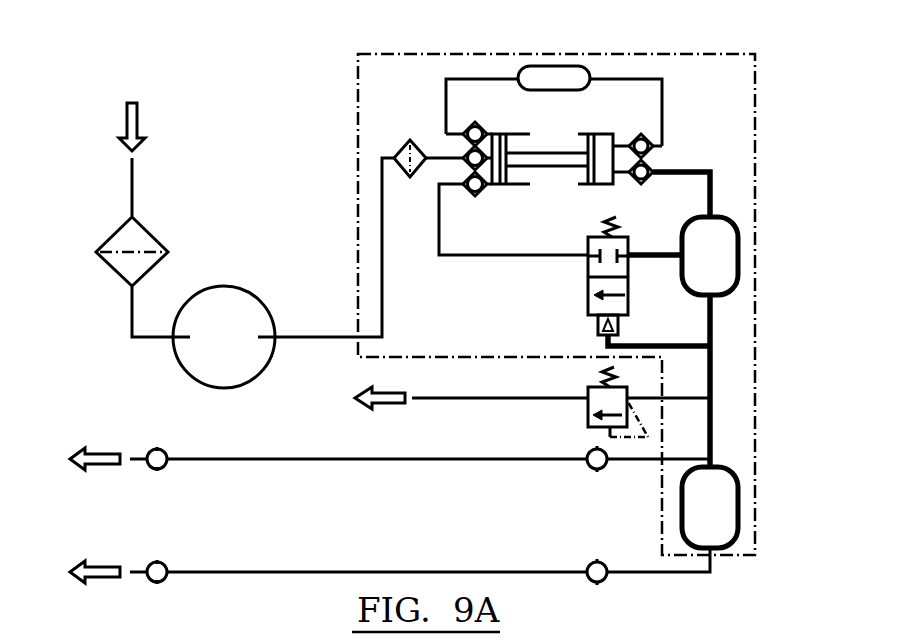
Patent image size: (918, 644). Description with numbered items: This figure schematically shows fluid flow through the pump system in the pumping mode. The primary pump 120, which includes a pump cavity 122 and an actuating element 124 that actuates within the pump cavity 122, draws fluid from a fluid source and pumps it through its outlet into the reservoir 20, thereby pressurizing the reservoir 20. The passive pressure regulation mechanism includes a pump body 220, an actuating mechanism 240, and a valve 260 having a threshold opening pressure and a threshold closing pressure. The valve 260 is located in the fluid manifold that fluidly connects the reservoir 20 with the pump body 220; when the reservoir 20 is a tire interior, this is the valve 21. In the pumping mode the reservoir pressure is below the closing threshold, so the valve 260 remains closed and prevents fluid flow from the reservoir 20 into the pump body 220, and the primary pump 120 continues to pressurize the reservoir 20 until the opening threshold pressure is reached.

The reservoir 20 is at (308, 515).
The valve 21 is at (597, 470).
The primary pump 120 is at (619, 121).
The pump cavity 122 is at (623, 156).
The actuating element 124 is at (588, 133).
The pump body 220 is at (487, 148).
The actuating mechanism 240 is at (522, 140).
The valve 260 is at (620, 305).